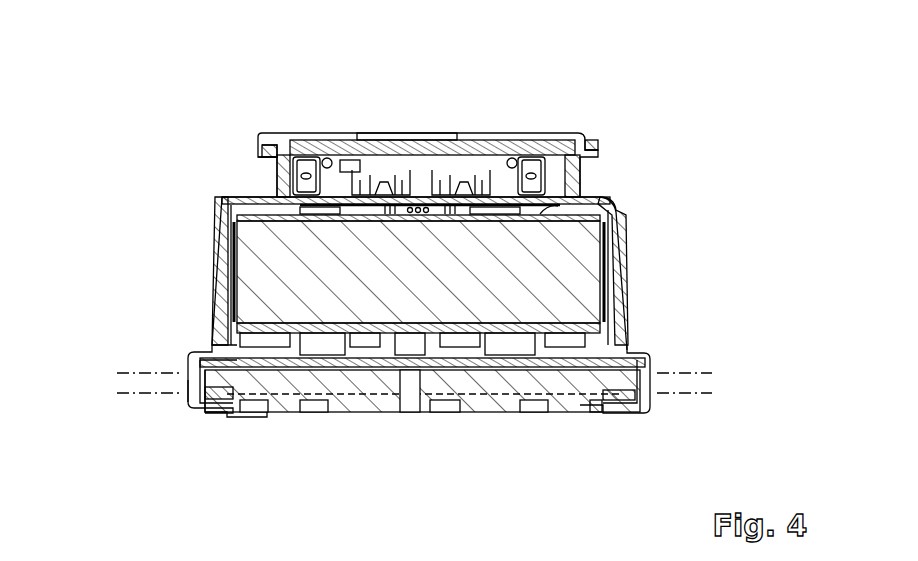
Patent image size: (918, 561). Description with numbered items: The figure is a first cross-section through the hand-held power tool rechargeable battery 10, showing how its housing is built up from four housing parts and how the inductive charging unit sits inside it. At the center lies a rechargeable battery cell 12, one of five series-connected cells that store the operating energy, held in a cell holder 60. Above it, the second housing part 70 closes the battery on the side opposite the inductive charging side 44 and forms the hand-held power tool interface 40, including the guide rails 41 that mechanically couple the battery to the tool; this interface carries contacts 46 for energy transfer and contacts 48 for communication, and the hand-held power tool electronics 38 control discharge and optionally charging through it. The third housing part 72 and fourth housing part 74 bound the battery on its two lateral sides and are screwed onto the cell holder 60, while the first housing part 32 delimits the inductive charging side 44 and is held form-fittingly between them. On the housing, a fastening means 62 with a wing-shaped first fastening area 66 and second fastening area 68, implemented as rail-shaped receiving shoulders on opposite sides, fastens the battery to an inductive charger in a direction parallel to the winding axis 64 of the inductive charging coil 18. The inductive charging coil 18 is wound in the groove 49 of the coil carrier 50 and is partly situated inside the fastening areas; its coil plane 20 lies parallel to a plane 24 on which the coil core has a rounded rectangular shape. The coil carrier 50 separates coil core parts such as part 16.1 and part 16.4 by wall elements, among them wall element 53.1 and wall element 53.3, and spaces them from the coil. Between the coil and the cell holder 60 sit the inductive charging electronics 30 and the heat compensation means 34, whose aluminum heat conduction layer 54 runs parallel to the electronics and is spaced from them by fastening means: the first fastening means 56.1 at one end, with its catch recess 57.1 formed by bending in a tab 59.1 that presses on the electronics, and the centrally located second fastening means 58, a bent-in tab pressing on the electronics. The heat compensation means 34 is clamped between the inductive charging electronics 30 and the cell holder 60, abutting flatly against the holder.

The hand-held power tool rechargeable battery 10 is at (665, 98).
The rechargeable battery cell 12 is at (600, 225).
The part of coil core 16.1 is at (562, 418).
The part of coil core 16.4 is at (283, 415).
The inductive charging coil 18 is at (213, 402).
The coil plane 20 is at (713, 397).
The plane 24 is at (713, 373).
The inductive charging electronics 30 is at (405, 340).
The first housing part 32 is at (314, 410).
The heat compensation means 34 is at (483, 333).
The hand-held power tool electronics 38 is at (352, 197).
The hand-held power tool interface 40 is at (514, 88).
The guide rail 41 is at (262, 148).
The inductive charging side 44 is at (410, 345).
The contact for energy transfer 46 is at (304, 152).
The contact for communication 48 is at (385, 192).
The groove 49 is at (186, 414).
The coil carrier 50 is at (598, 413).
The wall element 53.1 is at (530, 413).
The wall element 53.3 is at (257, 413).
The heat conduction layer 54 is at (483, 333).
The first fastening means 56.1 is at (370, 345).
The catch recess 57.1 is at (388, 345).
The second fastening means 58 is at (465, 333).
The tab 59.1 is at (402, 370).
The cell holder 60 is at (605, 312).
The fastening means 62 is at (205, 352).
The winding axis 64 is at (418, 418).
The first fastening area 66 is at (205, 352).
The second fastening area 68 is at (645, 350).
The second housing part 70 is at (612, 200).
The third housing part 72 is at (216, 270).
The fourth housing part 74 is at (626, 258).